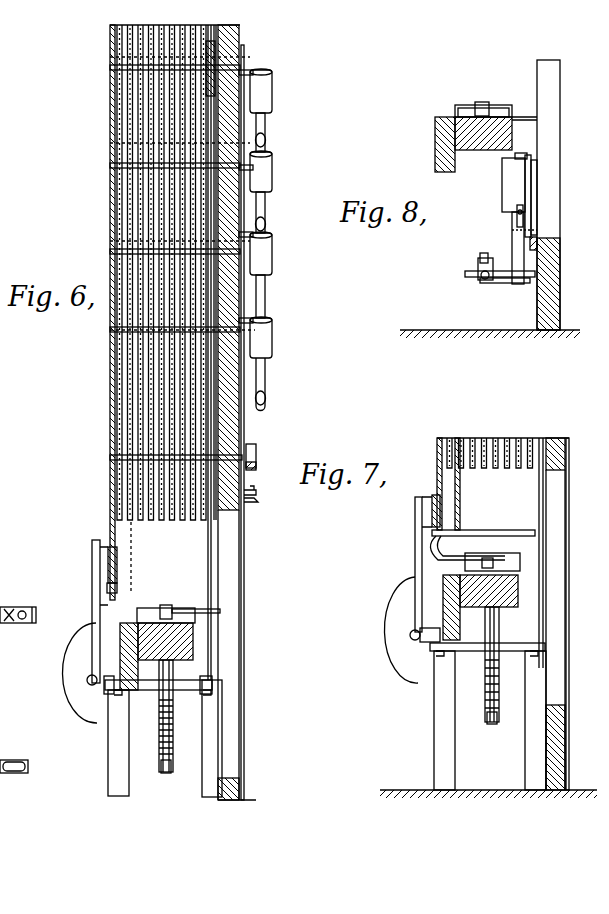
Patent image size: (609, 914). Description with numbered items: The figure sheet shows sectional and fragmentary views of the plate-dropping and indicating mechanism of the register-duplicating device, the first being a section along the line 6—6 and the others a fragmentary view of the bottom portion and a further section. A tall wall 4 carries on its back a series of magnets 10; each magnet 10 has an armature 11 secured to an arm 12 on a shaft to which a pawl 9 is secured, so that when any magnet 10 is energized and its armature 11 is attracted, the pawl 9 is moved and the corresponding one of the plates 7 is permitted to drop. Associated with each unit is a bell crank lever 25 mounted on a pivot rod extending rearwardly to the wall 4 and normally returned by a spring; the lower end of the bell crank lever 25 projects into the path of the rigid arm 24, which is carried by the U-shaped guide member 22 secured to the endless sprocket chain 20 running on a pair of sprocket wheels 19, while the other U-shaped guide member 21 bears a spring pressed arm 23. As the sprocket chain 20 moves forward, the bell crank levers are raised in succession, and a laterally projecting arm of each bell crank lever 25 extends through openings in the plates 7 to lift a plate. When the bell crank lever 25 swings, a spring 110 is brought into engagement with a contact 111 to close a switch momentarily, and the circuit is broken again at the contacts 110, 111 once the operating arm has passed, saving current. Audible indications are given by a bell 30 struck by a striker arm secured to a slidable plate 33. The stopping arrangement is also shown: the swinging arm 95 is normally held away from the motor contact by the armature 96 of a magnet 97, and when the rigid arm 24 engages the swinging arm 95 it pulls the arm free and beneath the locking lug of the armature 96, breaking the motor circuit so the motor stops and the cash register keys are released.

In FIG. 6, the wall 4 is at (238, 512).
In FIG. 7, the wall 4 is at (565, 463).
In FIG. 6, the section line 6— 6 is at (112, 498).
In FIG. 7, the section line 6— 6 is at (437, 457).
In FIG. 6, the plates 7 is at (130, 200).
In FIG. 6, the pawl 9 is at (112, 70).
In FIG. 6, the magnets 10 is at (272, 95).
In FIG. 6, the armature 11 is at (268, 139).
In FIG. 6, the arm 12 is at (266, 120).
In FIG. 6, the sprocket wheels 19 is at (160, 742).
In FIG. 7, the sprocket wheels 19 is at (486, 712).
In FIG. 6, the sprocket chain 20 is at (174, 766).
In FIG. 7, the sprocket chain 20 is at (492, 722).
In FIG. 8, the sprocket chain 20 is at (484, 110).
In FIG. 7, the guide member 21 is at (508, 566).
In FIG. 8, the guide member 21 is at (480, 262).
In FIG. 6, the guide member 22 is at (168, 610).
In FIG. 7, the spring pressed arm 23 is at (490, 533).
In FIG. 6, the rigid arm 24 is at (190, 610).
In FIG. 8, the rigid arm 24 is at (510, 283).
In FIG. 6, the bell crank lever 25 is at (158, 626).
In FIG. 7, the bell crank lever 25 is at (541, 611).
In FIG. 6, the bell 30 is at (93, 610).
In FIG. 7, the bell 30 is at (415, 562).
In FIG. 6, the slidable plate 33 is at (108, 545).
In FIG. 7, the slidable plate 33 is at (432, 495).
In FIG. 8, the swinging arm 95 is at (537, 197).
In FIG. 8, the armature 96 is at (517, 222).
In FIG. 8, the magnet 97 is at (502, 196).
In FIG. 6, the spring 110 is at (258, 450).
In FIG. 6, the contact 111 is at (256, 500).